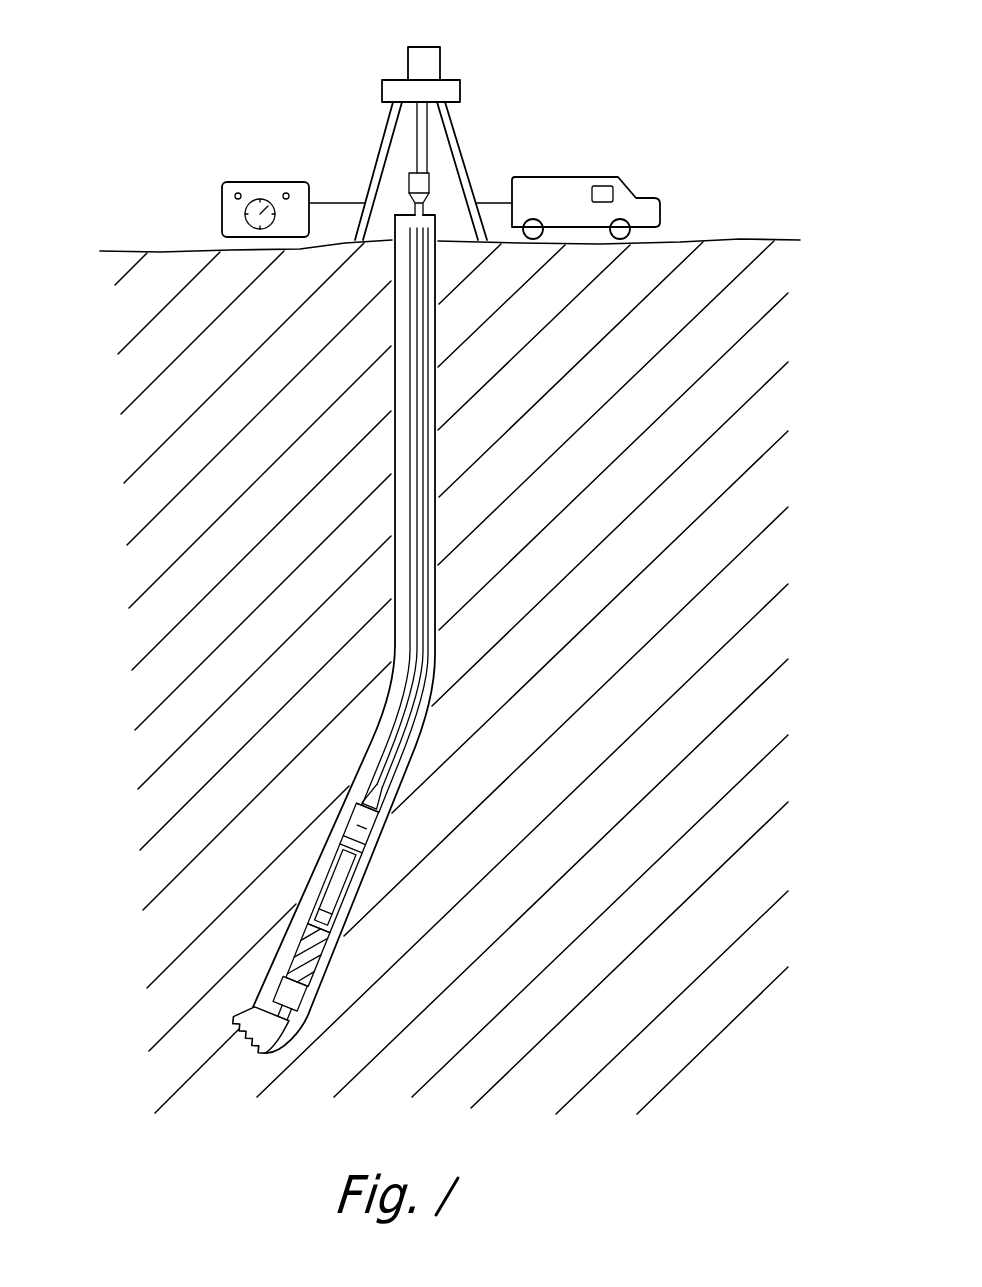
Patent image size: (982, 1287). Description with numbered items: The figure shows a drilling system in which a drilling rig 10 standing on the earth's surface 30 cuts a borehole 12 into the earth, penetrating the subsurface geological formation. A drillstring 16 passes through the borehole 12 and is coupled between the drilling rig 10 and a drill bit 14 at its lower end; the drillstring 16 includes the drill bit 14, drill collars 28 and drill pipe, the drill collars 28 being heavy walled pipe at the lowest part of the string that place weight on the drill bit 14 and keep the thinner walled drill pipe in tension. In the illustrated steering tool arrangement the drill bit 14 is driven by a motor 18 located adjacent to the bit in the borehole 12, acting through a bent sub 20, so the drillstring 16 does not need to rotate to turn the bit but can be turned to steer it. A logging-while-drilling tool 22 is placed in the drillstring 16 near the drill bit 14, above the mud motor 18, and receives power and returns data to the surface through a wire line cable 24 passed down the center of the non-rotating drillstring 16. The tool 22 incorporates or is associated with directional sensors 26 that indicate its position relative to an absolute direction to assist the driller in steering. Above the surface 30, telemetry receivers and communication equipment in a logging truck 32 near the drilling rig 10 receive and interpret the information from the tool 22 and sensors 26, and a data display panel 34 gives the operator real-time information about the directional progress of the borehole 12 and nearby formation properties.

The drilling rig 10 is at (462, 128).
The borehole 12 is at (433, 583).
The drill bit 14 is at (223, 1022).
The drillstring 16 is at (427, 530).
The motor 18 is at (318, 953).
The bent sub 20 is at (317, 1003).
The logging-while-drilling tool 22 is at (347, 880).
The wire line cable 24 is at (427, 410).
The directional sensors 26 is at (360, 833).
The drill collars 28 is at (352, 858).
The earth's surface 30 is at (121, 250).
The logging truck 32 is at (570, 177).
The data display panel 34 is at (222, 203).